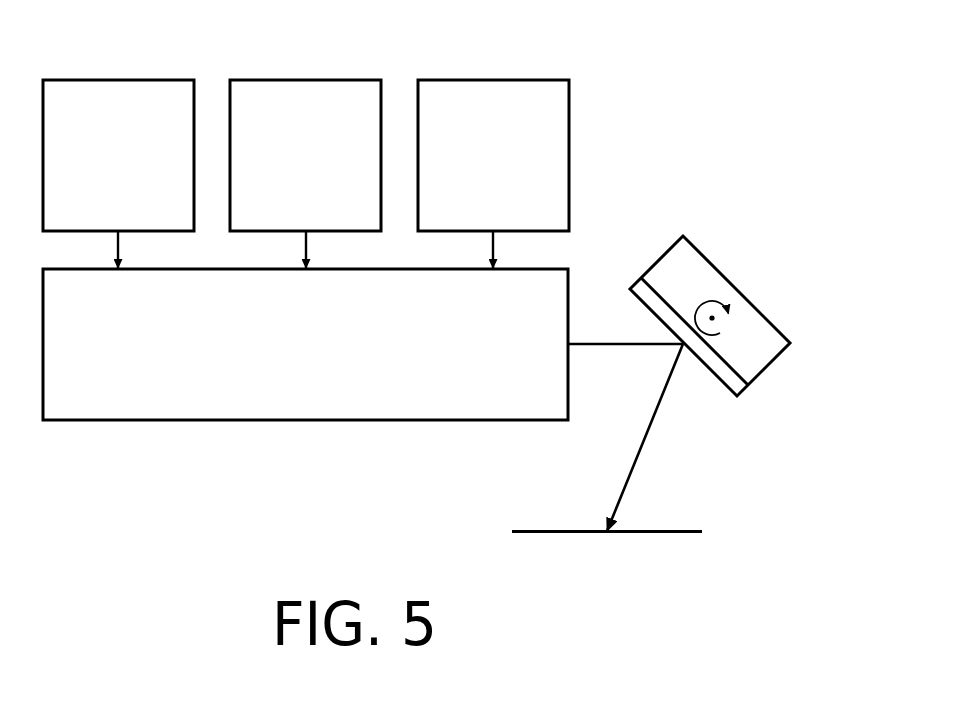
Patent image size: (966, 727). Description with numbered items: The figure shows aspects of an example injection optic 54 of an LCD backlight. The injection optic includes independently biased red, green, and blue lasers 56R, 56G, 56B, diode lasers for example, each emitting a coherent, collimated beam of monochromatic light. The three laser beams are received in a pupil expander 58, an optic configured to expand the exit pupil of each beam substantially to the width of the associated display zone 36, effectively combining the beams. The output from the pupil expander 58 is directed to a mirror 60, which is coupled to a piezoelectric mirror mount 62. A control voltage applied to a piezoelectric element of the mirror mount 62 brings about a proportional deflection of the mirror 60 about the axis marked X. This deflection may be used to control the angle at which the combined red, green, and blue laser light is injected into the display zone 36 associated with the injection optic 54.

The injection optic 54 is at (877, 117).
The red laser 56R is at (97, 168).
The green laser 56G is at (285, 168).
The blue laser 56B is at (472, 168).
The pupil expander 58 is at (292, 356).
The mirror 60 is at (741, 399).
The piezoelectric mirror mount 62 is at (662, 255).
The display zone 36 is at (607, 457).